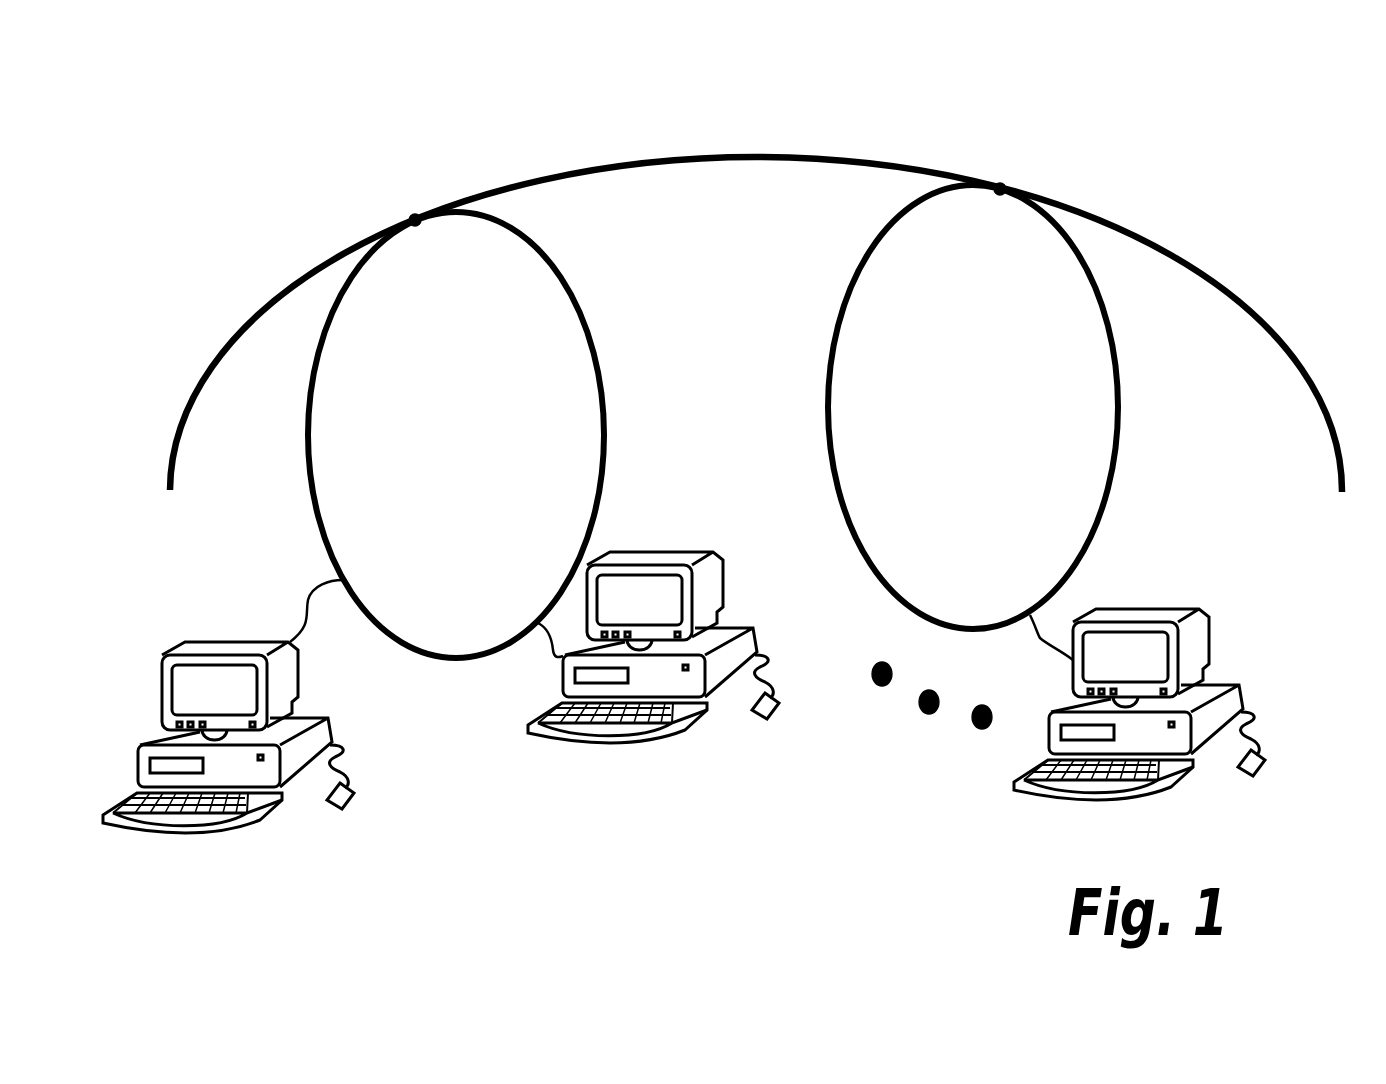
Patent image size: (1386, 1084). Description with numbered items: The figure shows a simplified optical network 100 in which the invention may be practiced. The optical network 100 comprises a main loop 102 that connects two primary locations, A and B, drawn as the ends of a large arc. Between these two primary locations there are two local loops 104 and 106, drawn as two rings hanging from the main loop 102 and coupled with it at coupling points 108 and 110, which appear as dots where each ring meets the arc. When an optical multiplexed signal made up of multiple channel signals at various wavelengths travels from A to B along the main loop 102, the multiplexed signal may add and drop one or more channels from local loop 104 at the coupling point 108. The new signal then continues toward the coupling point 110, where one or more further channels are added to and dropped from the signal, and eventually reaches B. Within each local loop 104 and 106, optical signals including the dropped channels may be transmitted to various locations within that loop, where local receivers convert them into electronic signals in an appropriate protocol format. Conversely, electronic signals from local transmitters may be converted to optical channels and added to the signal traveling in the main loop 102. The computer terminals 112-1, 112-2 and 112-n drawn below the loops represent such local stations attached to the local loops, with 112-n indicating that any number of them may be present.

The optical network 100 is at (1252, 181).
The main loop 102 is at (227, 340).
The local loop 104 is at (563, 323).
The local loop 106 is at (840, 386).
The coupling point 108 is at (415, 214).
The coupling point 110 is at (1005, 183).
The first computer terminal 112-1 is at (325, 717).
The second computer terminal 112-2 is at (678, 647).
The nth computer terminal 112-n is at (1164, 704).